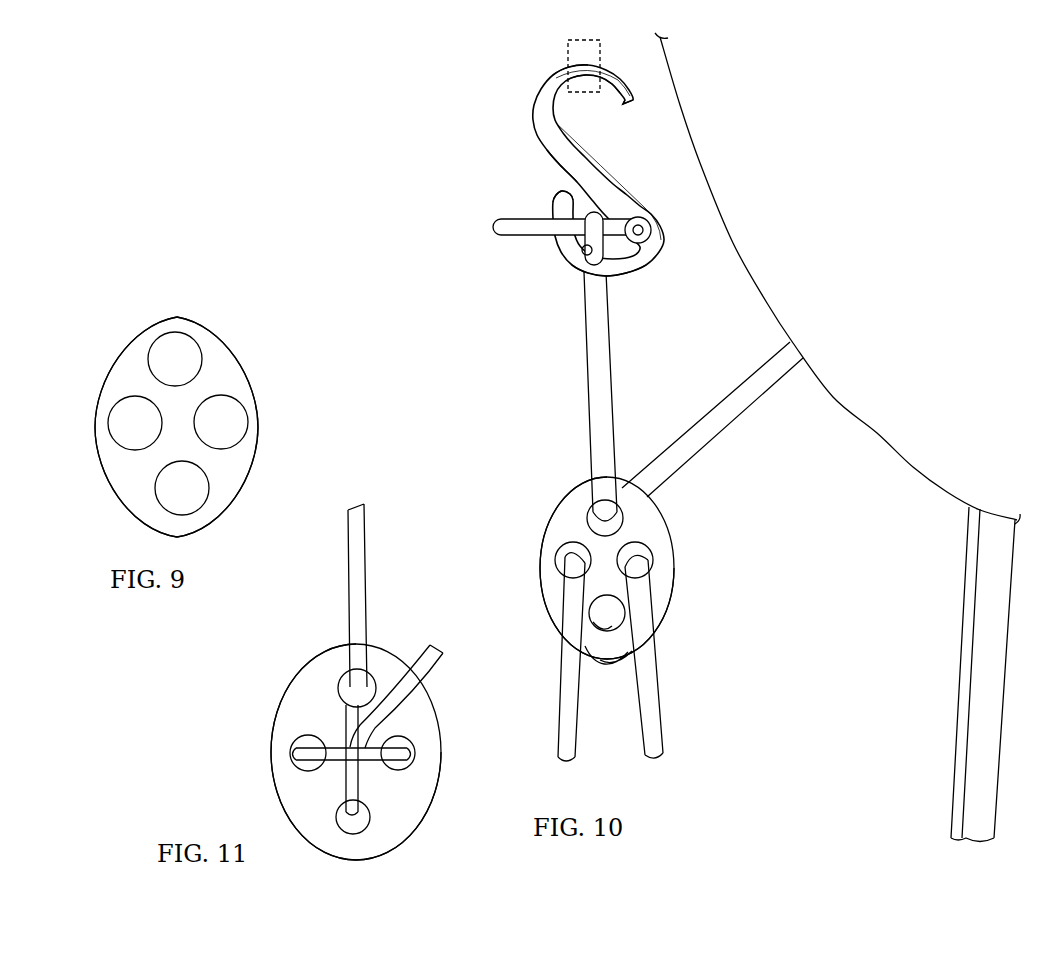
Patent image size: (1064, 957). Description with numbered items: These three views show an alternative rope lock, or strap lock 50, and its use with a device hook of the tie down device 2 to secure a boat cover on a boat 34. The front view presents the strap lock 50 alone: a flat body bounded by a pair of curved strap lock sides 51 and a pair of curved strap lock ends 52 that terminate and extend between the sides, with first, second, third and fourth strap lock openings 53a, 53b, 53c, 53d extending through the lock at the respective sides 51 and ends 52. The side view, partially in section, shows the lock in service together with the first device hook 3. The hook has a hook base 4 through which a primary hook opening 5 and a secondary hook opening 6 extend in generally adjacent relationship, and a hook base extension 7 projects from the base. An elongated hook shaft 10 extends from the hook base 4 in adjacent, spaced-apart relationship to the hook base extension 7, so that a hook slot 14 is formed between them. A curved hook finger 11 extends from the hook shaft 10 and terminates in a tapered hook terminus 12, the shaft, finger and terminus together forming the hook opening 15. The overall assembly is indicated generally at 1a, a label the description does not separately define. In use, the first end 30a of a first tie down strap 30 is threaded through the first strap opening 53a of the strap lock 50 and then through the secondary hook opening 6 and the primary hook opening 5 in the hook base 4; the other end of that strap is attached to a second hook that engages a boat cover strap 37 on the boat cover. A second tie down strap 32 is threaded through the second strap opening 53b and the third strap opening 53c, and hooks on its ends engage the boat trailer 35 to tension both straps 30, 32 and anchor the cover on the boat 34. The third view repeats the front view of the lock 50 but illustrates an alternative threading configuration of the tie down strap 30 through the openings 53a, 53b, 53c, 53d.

In FIG. 10, the fastening assembly 1a is at (350, 87).
In FIG. 10, the tie down device 2 is at (559, 171).
In FIG. 10, the first device hook 3 is at (515, 147).
In FIG. 10, the hook base 4 is at (630, 262).
In FIG. 10, the primary hook opening 5 is at (651, 240).
In FIG. 10, the secondary hook opening 6 is at (590, 254).
In FIG. 10, the hook base extension 7 is at (557, 198).
In FIG. 10, the hook shaft 10 is at (595, 167).
In FIG. 10, the hook finger 11 is at (560, 70).
In FIG. 10, the hook terminus 12 is at (632, 107).
In FIG. 10, the hook slot 14 is at (548, 177).
In FIG. 10, the hook opening 15 is at (603, 123).
In FIG. 10, the first tie down strap 30 is at (710, 423).
In FIG. 11, the first tie down strap 30 is at (353, 592).
In FIG. 10, the first end of first tie down strap 30a is at (493, 230).
In FIG. 10, the second tie down strap 32 is at (653, 723).
In FIG. 10, the boat 34 is at (882, 424).
In FIG. 10, the boat trailer 35 is at (987, 657).
In FIG. 10, the boat cover strap 37 is at (602, 53).
In FIG. 9, the strap lock 50 is at (250, 343).
In FIG. 10, the strap lock 50 is at (680, 506).
In FIG. 11, the strap lock 50 is at (452, 697).
In FIG. 9, the strap lock sides 51 is at (95, 410).
In FIG. 10, the strap lock sides 51 is at (542, 532).
In FIG. 11, the strap lock sides 51 is at (271, 744).
In FIG. 9, the strap lock ends 52 is at (176, 315).
In FIG. 10, the strap lock ends 52 is at (628, 664).
In FIG. 11, the strap lock ends 52 is at (371, 643).
In FIG. 9, the first strap lock opening 53a is at (160, 340).
In FIG. 10, the first strap lock opening 53a is at (617, 495).
In FIG. 11, the first strap lock opening 53a is at (340, 682).
In FIG. 9, the second strap lock opening 53b is at (120, 443).
In FIG. 10, the second strap lock opening 53b is at (557, 560).
In FIG. 11, the second strap lock opening 53b is at (297, 760).
In FIG. 9, the third strap lock opening 53c is at (245, 428).
In FIG. 10, the third strap lock opening 53c is at (646, 558).
In FIG. 11, the third strap lock opening 53c is at (405, 743).
In FIG. 9, the fourth strap lock opening 53d is at (173, 510).
In FIG. 10, the fourth strap lock opening 53d is at (598, 628).
In FIG. 11, the fourth strap lock opening 53d is at (342, 823).